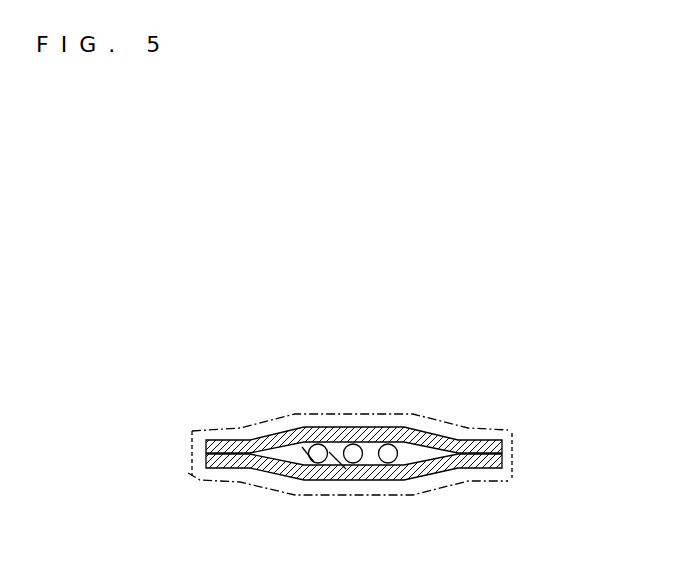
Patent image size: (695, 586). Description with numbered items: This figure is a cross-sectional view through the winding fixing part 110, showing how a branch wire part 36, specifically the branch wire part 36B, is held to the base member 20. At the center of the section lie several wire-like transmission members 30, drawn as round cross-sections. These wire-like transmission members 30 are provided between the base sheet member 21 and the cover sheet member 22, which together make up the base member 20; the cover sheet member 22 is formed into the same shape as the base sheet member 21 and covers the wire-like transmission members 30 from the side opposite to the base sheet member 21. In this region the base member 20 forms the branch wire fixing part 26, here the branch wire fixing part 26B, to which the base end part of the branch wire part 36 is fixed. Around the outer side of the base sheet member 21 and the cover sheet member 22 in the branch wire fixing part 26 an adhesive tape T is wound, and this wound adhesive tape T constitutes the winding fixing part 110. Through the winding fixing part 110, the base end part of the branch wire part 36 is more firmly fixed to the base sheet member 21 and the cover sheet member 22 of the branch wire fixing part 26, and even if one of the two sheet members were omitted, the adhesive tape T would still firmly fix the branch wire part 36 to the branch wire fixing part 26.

The winding fixing part 110 is at (410, 429).
The base member 20 is at (340, 454).
The base sheet member 21 is at (133, 421).
The cover sheet member 22 is at (363, 454).
The branch wire fixing part 26 is at (410, 476).
The lower cover layer portion 26B is at (348, 484).
The wire-like transmission member 30 is at (371, 490).
The branch wire part 36 is at (350, 398).
The branch wire part 36B is at (288, 421).
The adhesive tape T is at (542, 437).